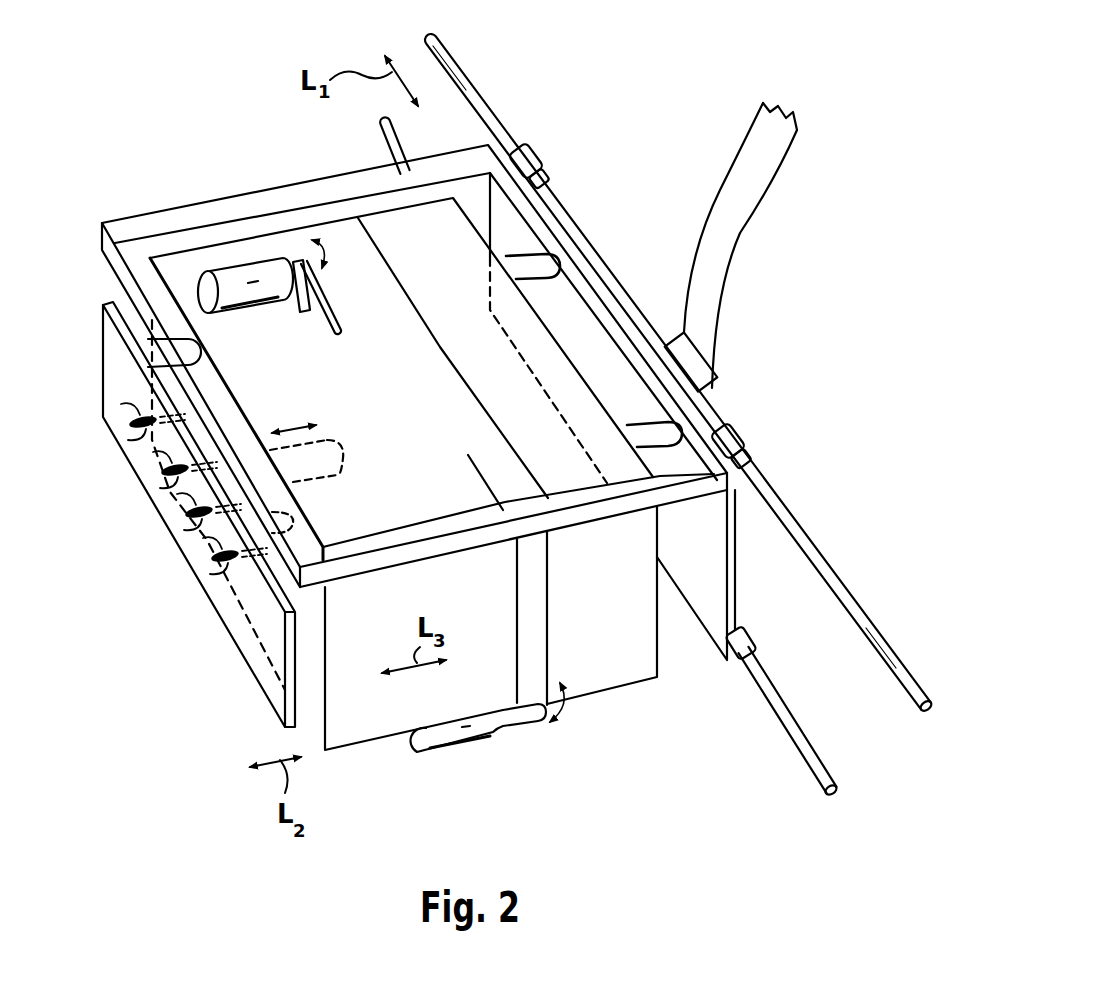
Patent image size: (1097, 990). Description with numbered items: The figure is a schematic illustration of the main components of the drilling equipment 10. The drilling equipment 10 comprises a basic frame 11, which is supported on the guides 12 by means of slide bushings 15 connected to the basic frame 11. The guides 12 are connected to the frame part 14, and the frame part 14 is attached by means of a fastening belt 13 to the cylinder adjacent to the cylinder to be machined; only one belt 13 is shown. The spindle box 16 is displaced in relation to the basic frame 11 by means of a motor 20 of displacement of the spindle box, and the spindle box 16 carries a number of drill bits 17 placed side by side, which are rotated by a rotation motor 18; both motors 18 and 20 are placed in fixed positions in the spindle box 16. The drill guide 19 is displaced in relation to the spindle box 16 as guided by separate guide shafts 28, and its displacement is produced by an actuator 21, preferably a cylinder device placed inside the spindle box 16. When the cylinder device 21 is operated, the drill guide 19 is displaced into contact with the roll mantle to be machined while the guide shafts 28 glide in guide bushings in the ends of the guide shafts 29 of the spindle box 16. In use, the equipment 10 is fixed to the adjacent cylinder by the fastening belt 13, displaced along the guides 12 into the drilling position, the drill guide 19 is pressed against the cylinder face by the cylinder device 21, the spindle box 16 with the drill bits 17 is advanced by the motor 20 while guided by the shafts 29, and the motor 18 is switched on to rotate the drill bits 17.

The drilling equipment 10 is at (182, 165).
The basic frame 11 is at (307, 187).
The guides 12 is at (563, 213).
The fastening belt 13 is at (740, 150).
The frame part 14 is at (700, 370).
The slide bushings 15 is at (537, 153).
The spindle box 16 is at (393, 622).
The drill bits 17 is at (190, 513).
The rotation motor 18 is at (240, 270).
The drill guide 19 is at (235, 640).
The motor of displacement of the spindle box 20 is at (457, 733).
The actuator 21 is at (340, 458).
The guide shafts 28 is at (140, 332).
The guide shafts of the spindle box 29 is at (647, 423).